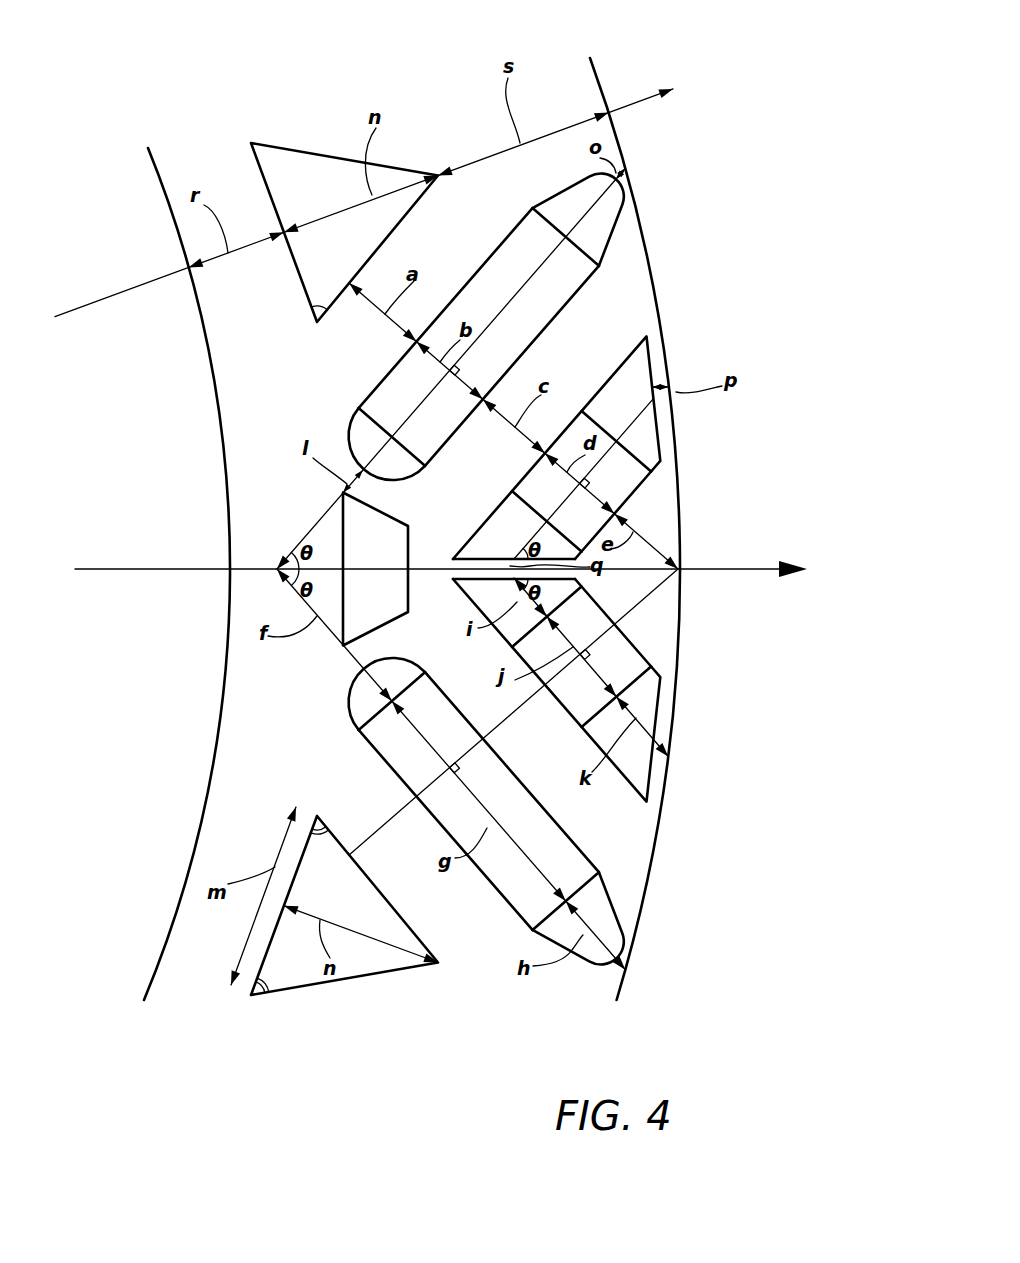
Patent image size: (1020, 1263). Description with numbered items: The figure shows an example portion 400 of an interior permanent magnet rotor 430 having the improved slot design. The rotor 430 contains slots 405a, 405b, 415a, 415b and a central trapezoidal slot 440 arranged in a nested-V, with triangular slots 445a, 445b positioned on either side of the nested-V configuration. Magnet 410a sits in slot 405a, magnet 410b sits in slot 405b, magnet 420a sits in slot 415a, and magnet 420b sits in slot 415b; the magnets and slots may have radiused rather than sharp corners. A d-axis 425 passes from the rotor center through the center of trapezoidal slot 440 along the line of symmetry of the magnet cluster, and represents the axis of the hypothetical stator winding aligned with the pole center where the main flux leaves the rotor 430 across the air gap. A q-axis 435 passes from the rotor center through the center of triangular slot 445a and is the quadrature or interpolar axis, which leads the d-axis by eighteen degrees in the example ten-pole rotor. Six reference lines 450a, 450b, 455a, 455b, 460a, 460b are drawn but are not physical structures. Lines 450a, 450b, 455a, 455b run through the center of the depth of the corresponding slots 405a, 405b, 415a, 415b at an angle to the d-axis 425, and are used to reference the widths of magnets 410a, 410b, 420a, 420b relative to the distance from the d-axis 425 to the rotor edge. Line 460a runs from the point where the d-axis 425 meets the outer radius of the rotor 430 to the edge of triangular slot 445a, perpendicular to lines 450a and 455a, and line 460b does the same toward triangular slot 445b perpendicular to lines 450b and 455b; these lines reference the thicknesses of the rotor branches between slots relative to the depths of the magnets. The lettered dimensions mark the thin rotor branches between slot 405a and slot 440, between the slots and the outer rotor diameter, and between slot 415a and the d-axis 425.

The rotor lamination 400 is at (150, 70).
The slot 405a is at (618, 222).
The slot 405b is at (618, 915).
The magnet 410a is at (587, 280).
The magnet 410b is at (585, 855).
The slot 415a is at (653, 358).
The slot 415b is at (655, 687).
The magnet 420a is at (640, 493).
The magnet 420b is at (640, 653).
The d-axis 425 is at (458, 562).
The rotor 430 is at (680, 613).
The q-axis 435 is at (383, 191).
The trapezoidal slot 440 is at (343, 525).
The triangular slot 445a is at (313, 153).
The triangular slot 445b is at (388, 972).
The line 450a is at (366, 400).
The line 450b is at (358, 668).
The line 455a is at (642, 425).
The line 455b is at (655, 733).
The line 460a is at (645, 548).
The line 460b is at (658, 585).